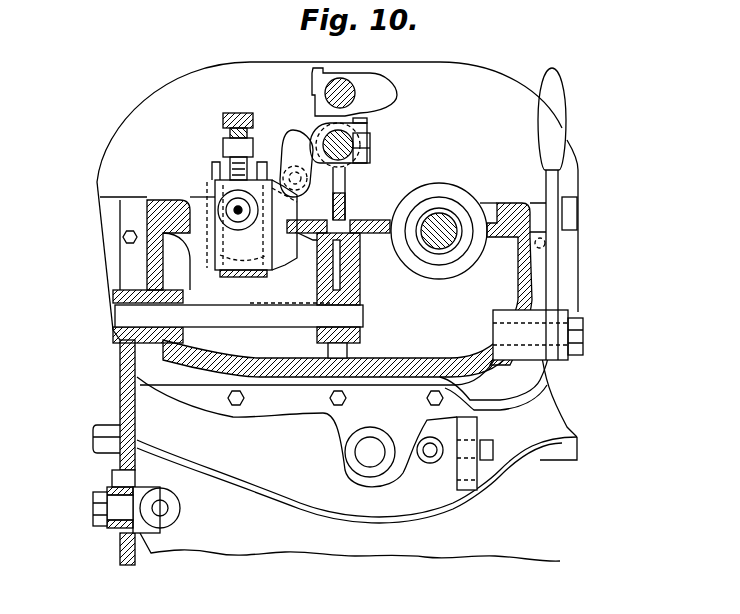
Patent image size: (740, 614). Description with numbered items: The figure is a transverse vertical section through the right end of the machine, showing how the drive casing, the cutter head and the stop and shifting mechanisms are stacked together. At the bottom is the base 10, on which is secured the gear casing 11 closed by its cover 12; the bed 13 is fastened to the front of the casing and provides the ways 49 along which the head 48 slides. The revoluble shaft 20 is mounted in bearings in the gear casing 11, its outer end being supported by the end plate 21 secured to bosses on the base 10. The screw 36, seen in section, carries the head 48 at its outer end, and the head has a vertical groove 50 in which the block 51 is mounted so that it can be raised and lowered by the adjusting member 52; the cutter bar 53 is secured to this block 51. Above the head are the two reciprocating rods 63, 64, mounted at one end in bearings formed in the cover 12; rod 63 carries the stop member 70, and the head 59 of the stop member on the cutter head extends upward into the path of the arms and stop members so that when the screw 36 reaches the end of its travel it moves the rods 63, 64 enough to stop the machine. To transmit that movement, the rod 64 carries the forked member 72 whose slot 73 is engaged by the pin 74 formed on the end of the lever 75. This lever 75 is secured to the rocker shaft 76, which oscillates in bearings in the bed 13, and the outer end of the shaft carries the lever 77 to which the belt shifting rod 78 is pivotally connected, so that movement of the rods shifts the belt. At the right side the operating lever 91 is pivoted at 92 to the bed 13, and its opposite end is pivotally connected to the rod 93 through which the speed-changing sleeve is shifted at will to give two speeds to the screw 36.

The base 10 is at (242, 548).
The gear casing 11 is at (549, 404).
The cover 12 is at (158, 99).
The bed 13 is at (420, 364).
The revoluble shaft 20 is at (367, 455).
The end plate 21 is at (370, 132).
The screw 36 is at (442, 215).
The head 48 is at (309, 262).
The ways 49 is at (147, 217).
The vertical groove 50 is at (237, 278).
The block 51 is at (223, 186).
The adjusting member 52 is at (235, 114).
The cutter bar 53 is at (187, 195).
The head of stop member 59 is at (292, 140).
The reciprocating rod 63 is at (337, 78).
The reciprocating rod 64 is at (370, 160).
The stop member 70 is at (373, 88).
The forked member 72 is at (345, 189).
The slot 73 is at (370, 215).
The pin 74 is at (307, 219).
The lever 75 is at (360, 276).
The rocker shaft 76 is at (270, 320).
The lever 77 is at (120, 396).
The belt shifting rod 78 is at (168, 510).
The operating lever 91 is at (560, 103).
The pivot 92 is at (583, 340).
The rod 93 is at (432, 460).